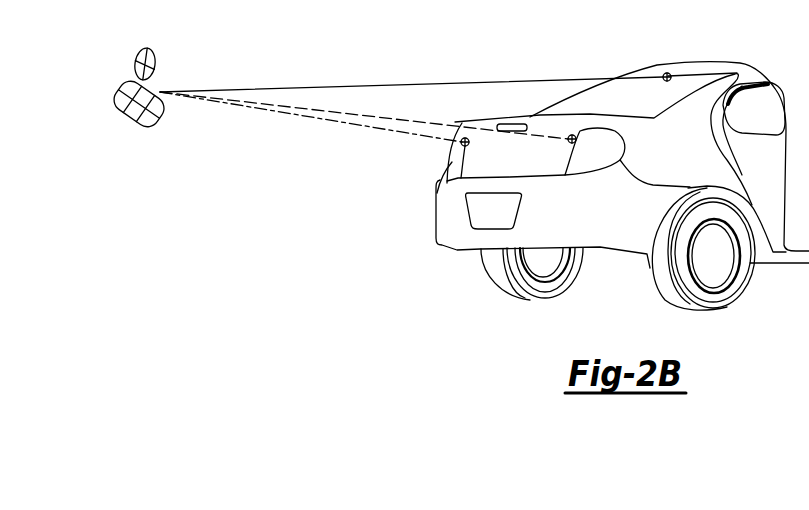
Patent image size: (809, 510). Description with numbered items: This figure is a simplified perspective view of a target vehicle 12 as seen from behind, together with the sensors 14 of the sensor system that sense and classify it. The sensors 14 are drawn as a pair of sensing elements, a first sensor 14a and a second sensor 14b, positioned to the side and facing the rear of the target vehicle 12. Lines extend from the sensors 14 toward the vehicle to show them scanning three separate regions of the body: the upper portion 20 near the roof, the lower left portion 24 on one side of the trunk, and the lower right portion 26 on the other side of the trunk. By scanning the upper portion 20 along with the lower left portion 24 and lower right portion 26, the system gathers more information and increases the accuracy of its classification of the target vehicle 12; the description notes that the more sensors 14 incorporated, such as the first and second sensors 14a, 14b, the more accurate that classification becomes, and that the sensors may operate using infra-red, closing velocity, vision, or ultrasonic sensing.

The target vehicle 12 is at (703, 63).
The sensors 14 is at (137, 152).
The first sensor 14a is at (135, 61).
The second sensor 14b is at (117, 96).
The upper portion 20 is at (665, 72).
The lower left portion 24 is at (465, 146).
The lower right portion 26 is at (571, 143).